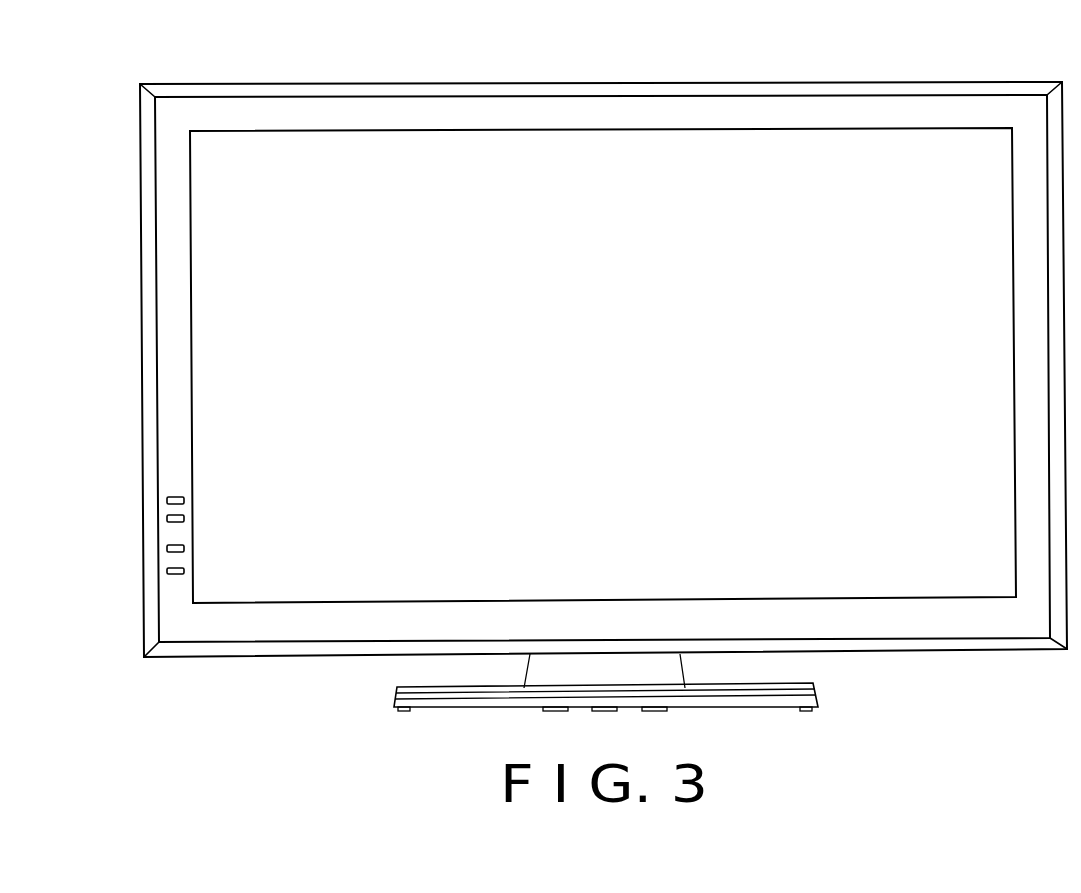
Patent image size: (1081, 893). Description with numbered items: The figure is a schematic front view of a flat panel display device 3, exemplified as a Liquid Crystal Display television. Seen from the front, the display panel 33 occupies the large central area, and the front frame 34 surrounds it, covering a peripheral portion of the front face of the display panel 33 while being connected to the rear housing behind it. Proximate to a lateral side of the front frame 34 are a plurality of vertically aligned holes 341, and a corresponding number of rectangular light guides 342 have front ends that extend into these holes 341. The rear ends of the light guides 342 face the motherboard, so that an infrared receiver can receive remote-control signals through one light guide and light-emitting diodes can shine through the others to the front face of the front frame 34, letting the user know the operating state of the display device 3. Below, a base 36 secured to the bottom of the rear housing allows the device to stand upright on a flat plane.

The flat panel display device 3 is at (888, 68).
The display panel 33 is at (853, 572).
The front frame 34 is at (950, 620).
The holes 341 is at (172, 575).
The light guides 342 is at (180, 575).
The base 36 is at (548, 672).